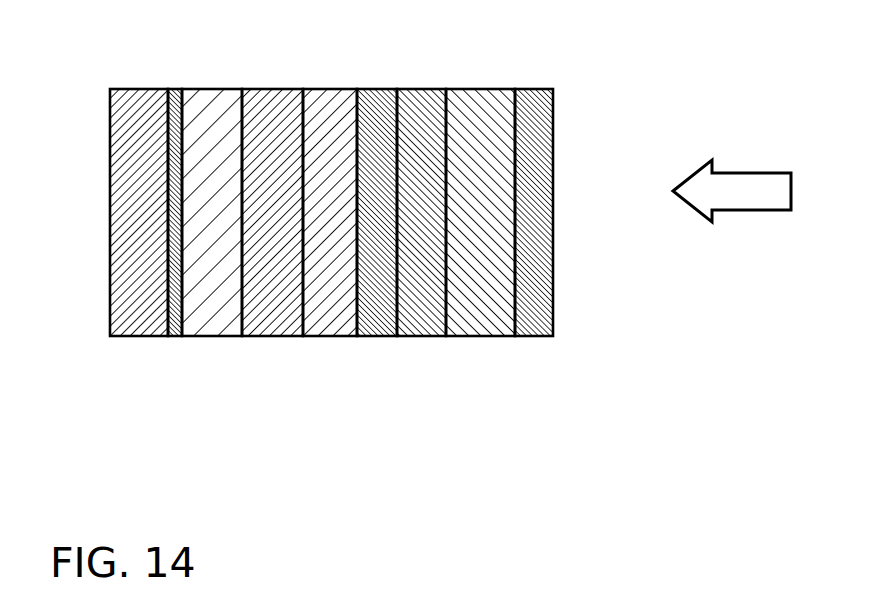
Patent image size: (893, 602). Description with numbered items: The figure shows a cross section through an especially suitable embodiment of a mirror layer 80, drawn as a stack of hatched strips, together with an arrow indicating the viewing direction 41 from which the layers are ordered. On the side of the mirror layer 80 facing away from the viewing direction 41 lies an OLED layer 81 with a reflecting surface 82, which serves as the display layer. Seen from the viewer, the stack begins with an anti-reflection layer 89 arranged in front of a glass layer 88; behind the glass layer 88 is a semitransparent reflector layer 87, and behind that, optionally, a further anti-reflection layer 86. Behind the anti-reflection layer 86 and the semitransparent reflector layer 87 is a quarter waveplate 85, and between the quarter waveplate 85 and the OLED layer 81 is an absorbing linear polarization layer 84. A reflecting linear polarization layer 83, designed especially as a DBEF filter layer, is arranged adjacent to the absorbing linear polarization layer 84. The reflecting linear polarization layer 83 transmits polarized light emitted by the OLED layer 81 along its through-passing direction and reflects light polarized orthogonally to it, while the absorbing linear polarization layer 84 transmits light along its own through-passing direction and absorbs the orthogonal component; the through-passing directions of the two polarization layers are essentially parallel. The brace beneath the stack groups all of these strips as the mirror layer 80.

The mirror layer 80 is at (331, 271).
The OLED layer 81 is at (138, 153).
The reflecting surface 82 is at (176, 300).
The reflecting linear polarization layer 83 is at (216, 153).
The absorbing linear polarization layer 84 is at (273, 300).
The quarter waveplate 85 is at (333, 153).
The anti-reflection layer 86 is at (373, 300).
The semitransparent reflector layer 87 is at (412, 153).
The glass layer 88 is at (472, 300).
The anti-reflection layer 89 is at (533, 153).
The viewing direction 41 is at (760, 190).